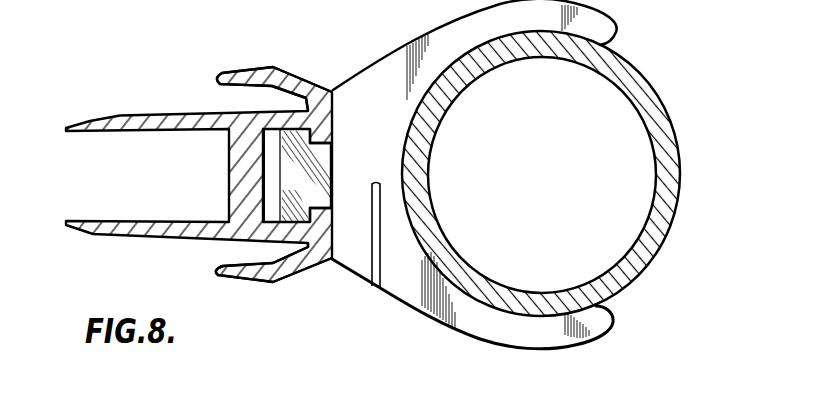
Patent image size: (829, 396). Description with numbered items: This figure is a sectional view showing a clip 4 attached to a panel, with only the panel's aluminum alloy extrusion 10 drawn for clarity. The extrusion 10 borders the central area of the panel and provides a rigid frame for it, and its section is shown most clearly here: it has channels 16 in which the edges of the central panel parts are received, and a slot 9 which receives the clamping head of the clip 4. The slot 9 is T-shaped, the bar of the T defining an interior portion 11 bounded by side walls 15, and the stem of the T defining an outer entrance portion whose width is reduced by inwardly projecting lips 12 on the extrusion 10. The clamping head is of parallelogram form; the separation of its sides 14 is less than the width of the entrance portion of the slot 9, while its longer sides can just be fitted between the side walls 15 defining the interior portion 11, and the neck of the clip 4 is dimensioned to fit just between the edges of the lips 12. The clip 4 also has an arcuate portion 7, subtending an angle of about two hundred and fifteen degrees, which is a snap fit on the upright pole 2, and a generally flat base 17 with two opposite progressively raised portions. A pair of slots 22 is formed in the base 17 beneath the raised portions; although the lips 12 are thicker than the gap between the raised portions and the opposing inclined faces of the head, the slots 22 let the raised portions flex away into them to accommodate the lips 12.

The upright pole 2 is at (635, 68).
The clip 4 is at (372, 85).
The arcuate portion 7 is at (472, 32).
The slot 9 is at (262, 175).
The aluminum alloy extrusion 10 is at (80, 122).
The interior portion 11 is at (272, 153).
The lip 12 is at (329, 131).
The side of the head 14 is at (300, 180).
The side wall 15 is at (273, 212).
The channel 16 is at (216, 80).
The base 17 is at (318, 240).
The slot 22 is at (380, 250).